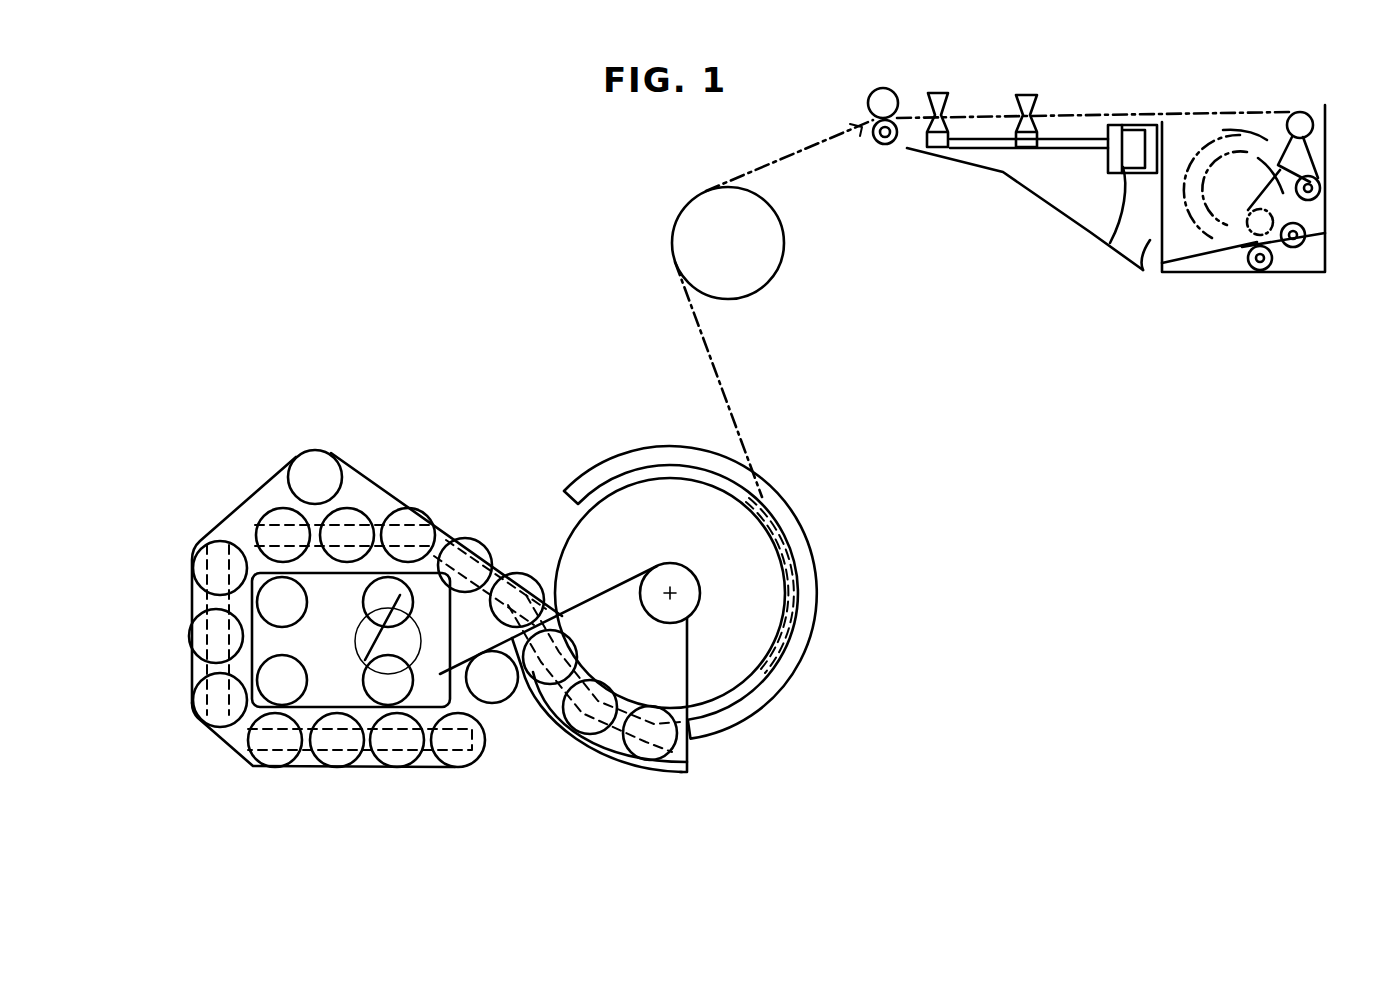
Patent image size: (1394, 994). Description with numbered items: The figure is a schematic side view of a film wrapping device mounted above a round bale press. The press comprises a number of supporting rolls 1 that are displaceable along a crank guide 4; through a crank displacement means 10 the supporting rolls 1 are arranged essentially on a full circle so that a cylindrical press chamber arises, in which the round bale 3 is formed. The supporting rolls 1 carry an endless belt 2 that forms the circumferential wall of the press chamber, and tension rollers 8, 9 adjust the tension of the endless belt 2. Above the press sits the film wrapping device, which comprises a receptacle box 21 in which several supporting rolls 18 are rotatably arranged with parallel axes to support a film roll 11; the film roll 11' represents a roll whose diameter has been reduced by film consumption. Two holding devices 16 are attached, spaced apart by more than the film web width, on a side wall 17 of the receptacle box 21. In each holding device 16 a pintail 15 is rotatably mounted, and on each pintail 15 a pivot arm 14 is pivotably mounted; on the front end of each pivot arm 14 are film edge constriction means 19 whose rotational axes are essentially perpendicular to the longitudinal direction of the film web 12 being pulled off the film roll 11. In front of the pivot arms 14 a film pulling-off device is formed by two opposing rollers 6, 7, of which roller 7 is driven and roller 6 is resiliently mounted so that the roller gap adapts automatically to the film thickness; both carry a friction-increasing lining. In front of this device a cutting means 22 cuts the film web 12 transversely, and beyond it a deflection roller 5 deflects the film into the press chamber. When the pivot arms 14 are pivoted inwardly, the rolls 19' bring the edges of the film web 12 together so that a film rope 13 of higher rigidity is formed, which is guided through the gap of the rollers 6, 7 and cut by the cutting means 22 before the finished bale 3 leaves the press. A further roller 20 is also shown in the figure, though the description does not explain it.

The supporting rolls 1 is at (213, 540).
The endless belt 2 is at (410, 495).
The round bale 3 is at (670, 593).
The crank guide 4 is at (773, 502).
The deflection roller 5 is at (757, 265).
The roller 6 is at (880, 92).
The roller 7 is at (885, 145).
The tension roller 8 is at (415, 597).
The tension roller 9 is at (365, 680).
The crank displacement means 10 is at (668, 639).
The film roll 11 is at (1243, 165).
The film roll having a reduced diameter 11' is at (1340, 171).
The film web 12 is at (725, 400).
The film rope 13 is at (796, 618).
The pivot arm 14 is at (982, 150).
The pintail 15 is at (1107, 165).
The holding device 16 is at (1095, 243).
The side wall 17 is at (1160, 262).
The supporting rolls 18 is at (1327, 243).
The film edge constriction means 19 is at (953, 100).
The rolls 19' is at (1049, 100).
The deflection roller 20 is at (1300, 110).
The receptacle box 21 is at (1328, 137).
The cutting means 22 is at (860, 136).